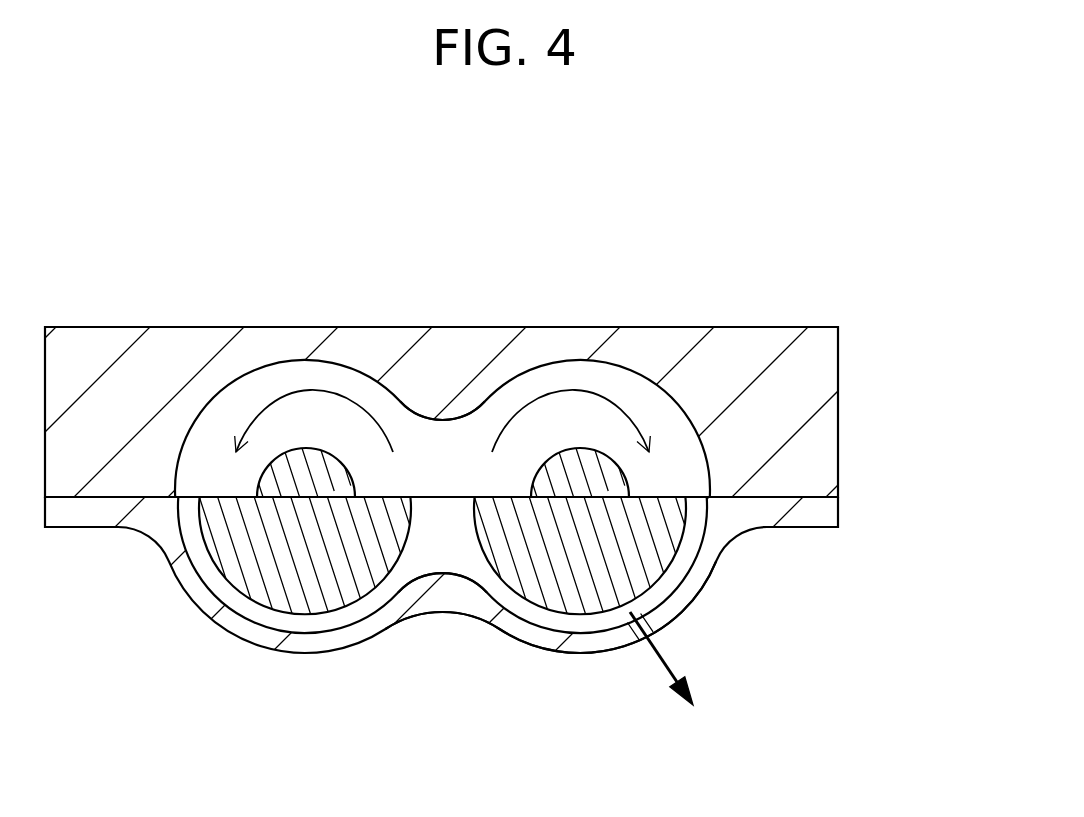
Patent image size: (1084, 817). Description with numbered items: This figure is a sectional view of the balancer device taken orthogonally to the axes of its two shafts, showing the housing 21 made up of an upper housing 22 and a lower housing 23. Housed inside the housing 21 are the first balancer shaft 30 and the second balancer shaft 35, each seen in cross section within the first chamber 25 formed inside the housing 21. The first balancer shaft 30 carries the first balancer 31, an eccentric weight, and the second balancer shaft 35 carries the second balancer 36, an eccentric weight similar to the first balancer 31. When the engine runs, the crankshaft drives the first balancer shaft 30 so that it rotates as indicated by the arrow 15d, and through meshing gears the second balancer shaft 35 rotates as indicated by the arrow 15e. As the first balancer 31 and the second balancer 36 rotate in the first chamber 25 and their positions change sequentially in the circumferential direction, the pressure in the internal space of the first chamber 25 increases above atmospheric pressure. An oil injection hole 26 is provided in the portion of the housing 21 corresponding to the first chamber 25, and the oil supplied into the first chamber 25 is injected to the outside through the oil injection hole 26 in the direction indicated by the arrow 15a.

The arrow 15a is at (667, 657).
The arrow 15d is at (573, 395).
The arrow 15e is at (299, 391).
The housing 21 is at (910, 447).
The upper housing 22 is at (841, 464).
The lower housing 23 is at (841, 503).
The first chamber 25 is at (402, 396).
The oil injection hole 26 is at (640, 641).
The first balancer shaft 30 is at (623, 472).
The first balancer 31 is at (522, 641).
The second balancer shaft 35 is at (254, 478).
The second balancer 36 is at (400, 560).